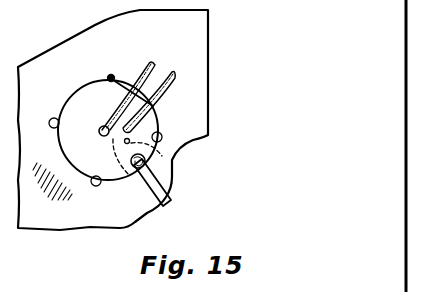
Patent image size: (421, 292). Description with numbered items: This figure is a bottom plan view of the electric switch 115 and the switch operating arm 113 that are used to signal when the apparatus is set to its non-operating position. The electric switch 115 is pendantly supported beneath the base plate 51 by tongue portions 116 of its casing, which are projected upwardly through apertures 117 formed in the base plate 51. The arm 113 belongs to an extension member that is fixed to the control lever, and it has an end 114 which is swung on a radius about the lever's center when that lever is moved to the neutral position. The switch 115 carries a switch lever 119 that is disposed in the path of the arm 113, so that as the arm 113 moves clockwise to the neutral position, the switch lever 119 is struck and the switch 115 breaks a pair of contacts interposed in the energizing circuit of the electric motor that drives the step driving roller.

The base plate 51 is at (202, 33).
The arm 113 is at (171, 199).
The end 114 is at (146, 172).
The electric switch 115 is at (79, 90).
The tongue portions 116 is at (110, 75).
The apertures 117 is at (116, 75).
The switch lever 119 is at (139, 179).